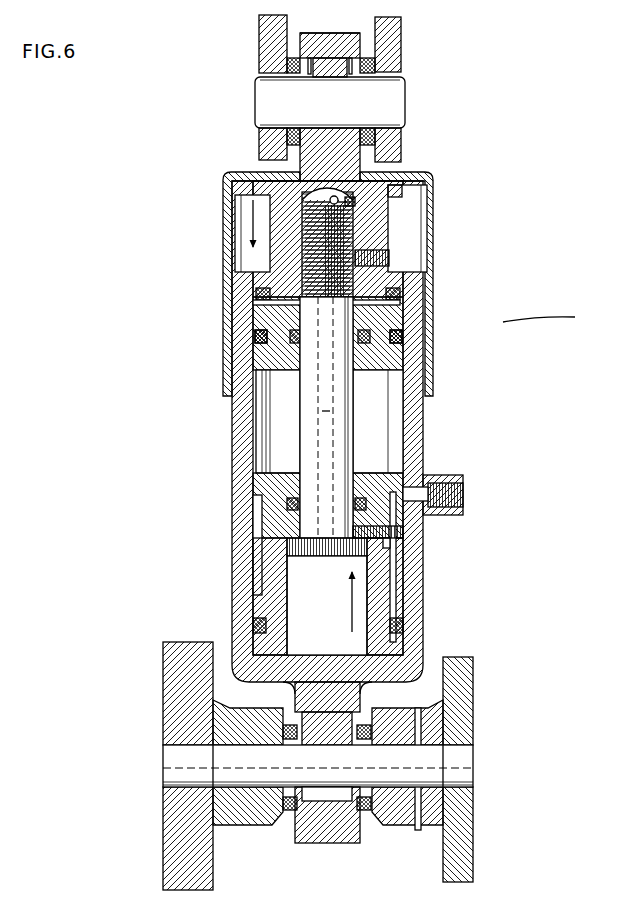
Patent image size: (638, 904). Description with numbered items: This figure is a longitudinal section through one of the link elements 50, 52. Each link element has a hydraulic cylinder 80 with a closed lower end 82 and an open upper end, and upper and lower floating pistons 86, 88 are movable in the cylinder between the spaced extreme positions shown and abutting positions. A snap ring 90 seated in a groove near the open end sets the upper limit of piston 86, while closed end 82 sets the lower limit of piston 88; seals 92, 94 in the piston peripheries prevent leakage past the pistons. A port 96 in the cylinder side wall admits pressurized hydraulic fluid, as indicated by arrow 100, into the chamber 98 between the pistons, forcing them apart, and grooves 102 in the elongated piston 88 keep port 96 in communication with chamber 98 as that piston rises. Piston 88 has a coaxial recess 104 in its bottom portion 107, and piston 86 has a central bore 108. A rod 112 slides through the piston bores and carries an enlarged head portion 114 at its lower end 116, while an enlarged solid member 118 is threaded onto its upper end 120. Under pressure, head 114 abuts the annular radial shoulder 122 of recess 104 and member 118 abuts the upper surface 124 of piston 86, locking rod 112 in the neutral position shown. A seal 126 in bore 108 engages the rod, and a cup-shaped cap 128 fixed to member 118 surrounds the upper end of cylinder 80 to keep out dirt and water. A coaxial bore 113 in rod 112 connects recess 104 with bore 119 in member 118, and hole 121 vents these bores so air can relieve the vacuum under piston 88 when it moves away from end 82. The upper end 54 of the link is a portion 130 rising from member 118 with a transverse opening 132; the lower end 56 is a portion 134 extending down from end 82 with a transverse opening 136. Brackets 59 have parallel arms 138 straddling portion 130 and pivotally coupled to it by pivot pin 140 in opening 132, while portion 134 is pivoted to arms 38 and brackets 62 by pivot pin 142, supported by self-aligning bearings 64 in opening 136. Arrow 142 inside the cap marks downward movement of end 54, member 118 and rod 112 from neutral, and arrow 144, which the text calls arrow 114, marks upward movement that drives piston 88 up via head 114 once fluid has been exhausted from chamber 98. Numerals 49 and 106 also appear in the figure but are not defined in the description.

The arm 38 is at (163, 829).
The upper end plate 49 is at (368, 46).
The link element 50 is at (503, 322).
The link element 52 is at (539, 319).
The upper end 54 is at (336, 31).
The lower end 56 is at (322, 846).
The bracket 59 is at (428, 50).
The bracket 62 is at (474, 827).
The self-aligning bearing 64 is at (287, 820).
The hydraulic cylinder 80 is at (233, 485).
The closed lower end 82 is at (376, 670).
The upper floating piston 86 is at (408, 321).
The lower floating piston 88 is at (392, 610).
The snap ring 90 is at (426, 290).
The seal 92 is at (404, 337).
The seal 94 is at (403, 628).
The port 96 is at (457, 478).
The chamber 98 is at (394, 440).
The arrow 100 is at (470, 494).
The groove 102 is at (398, 558).
The coaxial recess 104 is at (337, 617).
The bottom wall 106 is at (383, 650).
The bottom portion 107 is at (380, 589).
The central bore 108 is at (290, 373).
The rod 112 is at (347, 451).
The coaxial bore 113 is at (334, 411).
The enlarged head portion 114 is at (338, 551).
The lower end 116 is at (310, 519).
The enlarged solid member 118 is at (375, 218).
The bore 119 is at (344, 204).
The upper end 120 is at (356, 240).
The hole 121 is at (318, 199).
The annular radial shoulder 122 is at (360, 533).
The upper surface 124 is at (258, 289).
The seal 126 is at (262, 340).
The cup-shaped cap 128 is at (229, 248).
The portion 130 is at (322, 33).
The transverse opening 132 is at (362, 156).
The portion 134 is at (337, 844).
The transverse opening 136 is at (360, 815).
The arm 138 is at (262, 59).
The pivot pin 140 is at (406, 109).
The pivot pin 142 is at (252, 223).
The flow direction arrow 144 is at (352, 608).